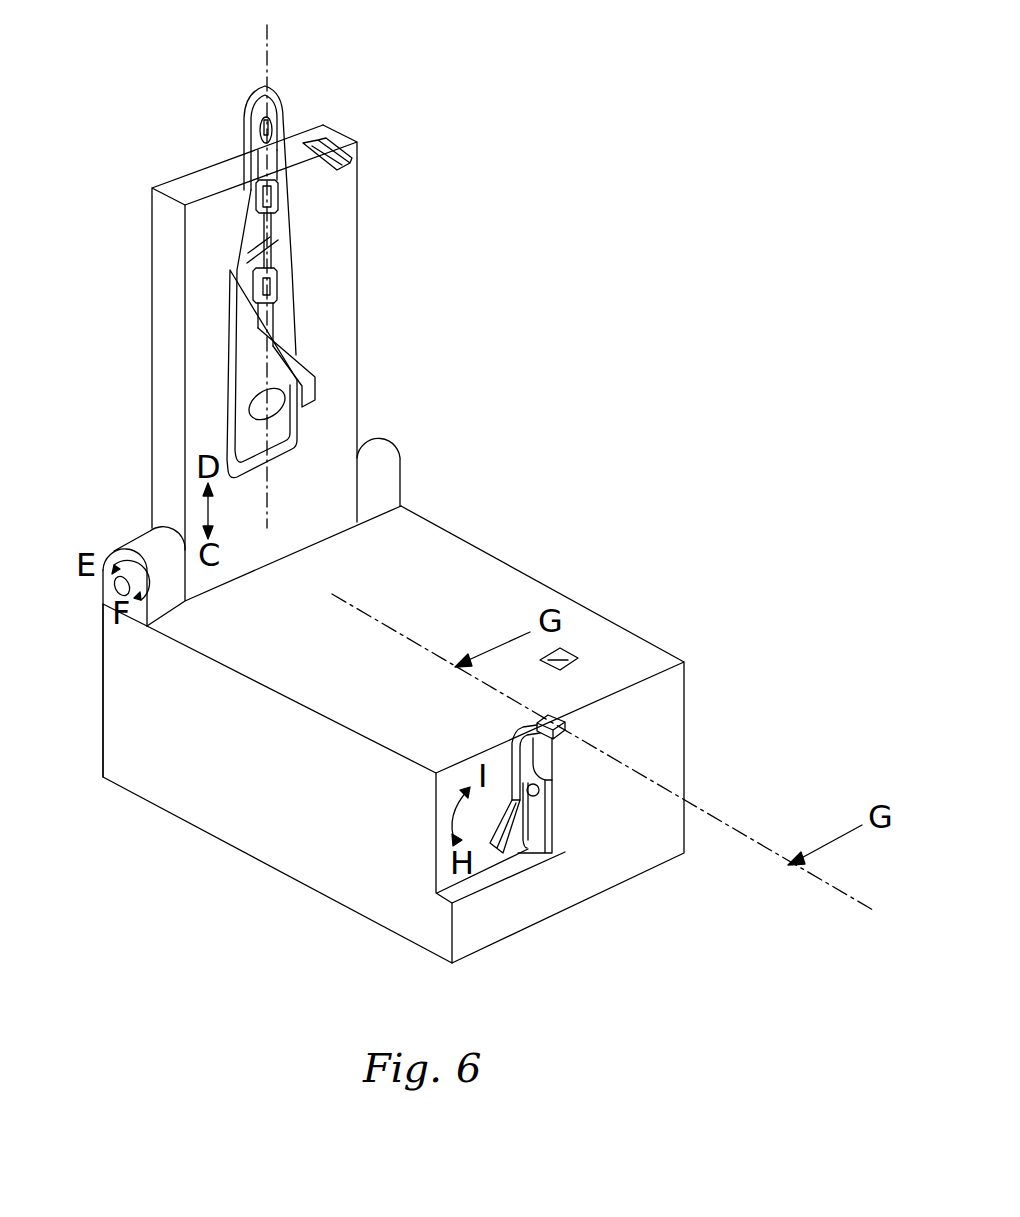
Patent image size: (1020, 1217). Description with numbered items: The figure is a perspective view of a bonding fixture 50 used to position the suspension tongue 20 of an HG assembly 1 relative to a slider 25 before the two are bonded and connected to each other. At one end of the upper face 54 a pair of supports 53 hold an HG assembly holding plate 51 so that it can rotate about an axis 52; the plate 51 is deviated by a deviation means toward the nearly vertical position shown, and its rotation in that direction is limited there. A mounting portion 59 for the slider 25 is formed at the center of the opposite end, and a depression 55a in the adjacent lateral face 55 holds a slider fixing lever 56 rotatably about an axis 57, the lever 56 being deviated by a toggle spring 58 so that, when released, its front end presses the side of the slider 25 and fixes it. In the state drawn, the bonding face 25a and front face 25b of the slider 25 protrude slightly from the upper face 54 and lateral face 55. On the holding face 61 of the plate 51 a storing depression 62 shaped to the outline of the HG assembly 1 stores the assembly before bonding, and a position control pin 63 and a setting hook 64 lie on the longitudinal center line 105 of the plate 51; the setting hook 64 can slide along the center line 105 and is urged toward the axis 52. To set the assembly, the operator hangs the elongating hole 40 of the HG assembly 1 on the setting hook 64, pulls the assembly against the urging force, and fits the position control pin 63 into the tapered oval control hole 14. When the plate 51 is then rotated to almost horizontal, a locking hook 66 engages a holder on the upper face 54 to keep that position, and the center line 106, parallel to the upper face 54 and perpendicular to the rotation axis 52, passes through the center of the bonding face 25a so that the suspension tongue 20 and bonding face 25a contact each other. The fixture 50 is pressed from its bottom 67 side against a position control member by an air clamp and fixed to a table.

The HG assembly 1 is at (283, 327).
The tapered oval control hole 14 is at (266, 195).
The suspension tongue 20 is at (266, 127).
The slider 25 is at (560, 698).
The bonding face 25a is at (537, 725).
The front face 25b is at (560, 738).
The elongating hole 40 is at (266, 272).
The bonding fixture 50 is at (594, 560).
The HG assembly holding plate 51 is at (337, 417).
The axis 52 is at (117, 590).
The supports 53 is at (157, 607).
The upper face 54 is at (298, 677).
The lateral face 55 is at (668, 753).
The depression 55a is at (440, 823).
The slider fixing lever 56 is at (520, 843).
The axis 57 is at (539, 788).
The toggle spring 58 is at (553, 852).
The mounting portion 59 is at (578, 725).
The holding face 61 is at (207, 284).
The storing depression 62 is at (236, 436).
The position control pin 63 is at (259, 178).
The setting hook 64 is at (265, 286).
The locking hook 66 is at (343, 160).
The bottom 67 is at (575, 652).
The center line 105 is at (272, 52).
The center line 106 is at (390, 622).